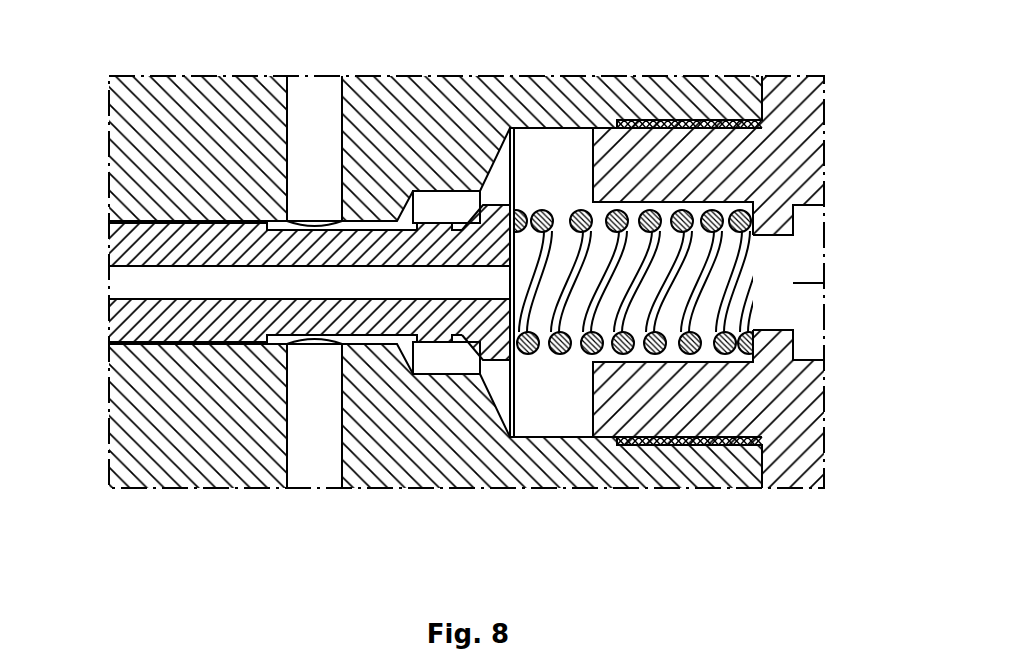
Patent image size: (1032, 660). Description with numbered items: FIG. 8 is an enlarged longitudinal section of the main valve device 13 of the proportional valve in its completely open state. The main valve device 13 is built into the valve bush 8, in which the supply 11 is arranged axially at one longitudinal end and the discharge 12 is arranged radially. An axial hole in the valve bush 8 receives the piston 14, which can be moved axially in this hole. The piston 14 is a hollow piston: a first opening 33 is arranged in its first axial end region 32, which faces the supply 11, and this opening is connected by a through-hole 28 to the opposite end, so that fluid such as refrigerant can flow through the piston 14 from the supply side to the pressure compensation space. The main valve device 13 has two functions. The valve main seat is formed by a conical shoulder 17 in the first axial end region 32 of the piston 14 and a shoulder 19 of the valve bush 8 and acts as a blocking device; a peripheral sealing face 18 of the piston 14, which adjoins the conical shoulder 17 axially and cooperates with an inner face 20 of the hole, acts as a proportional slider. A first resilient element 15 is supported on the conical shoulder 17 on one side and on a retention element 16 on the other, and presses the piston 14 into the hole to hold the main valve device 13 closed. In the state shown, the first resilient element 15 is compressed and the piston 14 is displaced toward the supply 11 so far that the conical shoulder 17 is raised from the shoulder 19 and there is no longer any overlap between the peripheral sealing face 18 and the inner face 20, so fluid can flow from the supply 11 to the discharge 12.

The valve bush 8 is at (168, 132).
The supply 11 is at (840, 304).
The discharge 12 is at (313, 132).
The main valve device 13 is at (453, 417).
The piston 14 is at (140, 244).
The first resilient element 15 is at (513, 277).
The retention element 16 is at (798, 138).
The conical shoulder 17 is at (500, 348).
The peripheral sealing face 18 is at (446, 228).
The shoulder 19 is at (405, 208).
The inner face 20 is at (373, 220).
The through-hole 28 is at (165, 288).
The first axial end region 32 is at (517, 256).
The first opening 33 is at (513, 290).